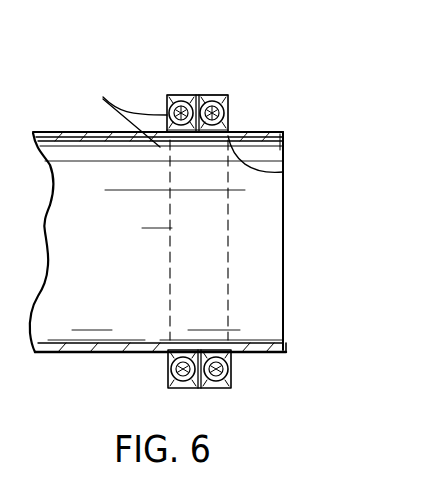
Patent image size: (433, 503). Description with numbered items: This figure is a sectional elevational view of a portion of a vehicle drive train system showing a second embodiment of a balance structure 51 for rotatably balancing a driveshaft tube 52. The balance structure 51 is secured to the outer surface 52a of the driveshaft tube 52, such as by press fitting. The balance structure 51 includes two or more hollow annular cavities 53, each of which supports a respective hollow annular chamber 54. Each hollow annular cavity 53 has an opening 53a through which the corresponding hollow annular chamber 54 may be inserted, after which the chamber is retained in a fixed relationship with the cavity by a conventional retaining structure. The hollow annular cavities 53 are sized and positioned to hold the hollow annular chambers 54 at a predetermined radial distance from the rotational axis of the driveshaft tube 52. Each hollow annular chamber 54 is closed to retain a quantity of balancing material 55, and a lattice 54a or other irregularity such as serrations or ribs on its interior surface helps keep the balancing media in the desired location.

The balance structure 51 is at (228, 63).
The driveshaft tube 52 is at (283, 95).
The outer surface 52a is at (258, 132).
The hollow annular cavities 53 is at (212, 97).
The opening 53a is at (167, 107).
The hollow annular chambers 54 is at (122, 112).
The lattice 54a is at (283, 172).
The balancing material 55 is at (190, 380).